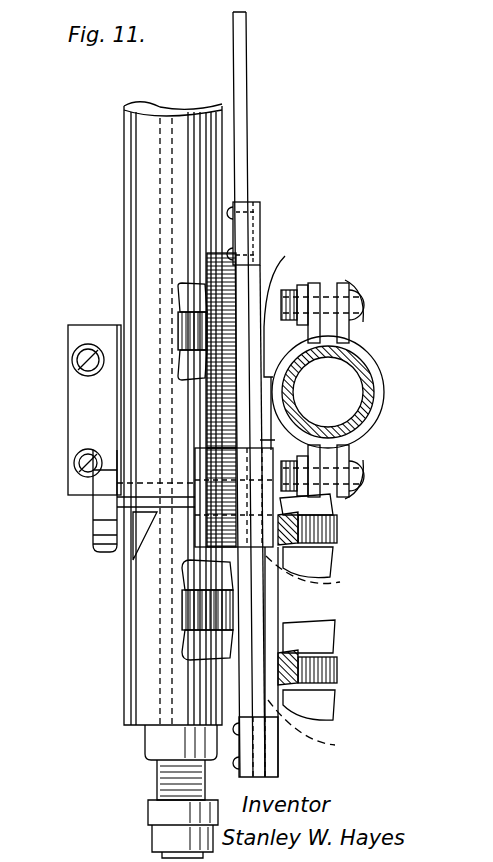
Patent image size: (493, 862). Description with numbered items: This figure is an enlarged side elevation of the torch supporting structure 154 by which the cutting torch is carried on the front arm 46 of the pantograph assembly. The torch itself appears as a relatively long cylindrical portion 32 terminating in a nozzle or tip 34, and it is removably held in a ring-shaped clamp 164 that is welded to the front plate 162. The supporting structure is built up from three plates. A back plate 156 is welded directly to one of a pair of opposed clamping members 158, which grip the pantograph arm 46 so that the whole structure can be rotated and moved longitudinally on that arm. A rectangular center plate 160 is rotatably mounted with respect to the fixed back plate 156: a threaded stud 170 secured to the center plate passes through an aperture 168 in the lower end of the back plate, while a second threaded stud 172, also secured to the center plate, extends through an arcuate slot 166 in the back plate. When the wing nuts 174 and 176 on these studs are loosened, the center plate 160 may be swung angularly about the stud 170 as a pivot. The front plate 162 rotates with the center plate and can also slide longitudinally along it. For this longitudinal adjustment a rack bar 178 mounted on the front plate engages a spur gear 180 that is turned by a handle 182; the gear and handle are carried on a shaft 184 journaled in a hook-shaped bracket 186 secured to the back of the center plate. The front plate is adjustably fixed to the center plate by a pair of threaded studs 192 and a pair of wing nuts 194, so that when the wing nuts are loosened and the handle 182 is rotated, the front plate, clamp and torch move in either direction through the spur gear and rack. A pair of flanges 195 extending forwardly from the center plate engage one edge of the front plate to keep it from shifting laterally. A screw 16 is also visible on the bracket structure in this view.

The screw 16 is at (68, 378).
The cylindrical portion 32 is at (148, 702).
The nozzle or tip 34 is at (160, 858).
The front arm of the pantograph assembly 46 is at (346, 378).
The supporting structure 154 is at (251, 139).
The back plate 156 is at (268, 285).
The clamping members 158 is at (318, 338).
The center plate 160 is at (262, 268).
The front plate 162 is at (240, 188).
The ring-shaped clamp 164 is at (160, 318).
The arcuate slot 166 is at (326, 728).
The aperture 168 is at (329, 579).
The threaded stud 170 is at (330, 525).
The second threaded stud 172 is at (335, 664).
The wing nut 174 is at (330, 562).
The wing nut 176 is at (330, 630).
The rack bar 178 is at (212, 283).
The spur gear 180 is at (2, 455).
The handle 182 is at (95, 510).
The shaft 184 is at (2, 522).
The hook-shaped bracket 186 is at (2, 558).
The threaded studs 192 is at (178, 330).
The wing nuts 194 is at (180, 296).
The flanges 195 is at (256, 230).